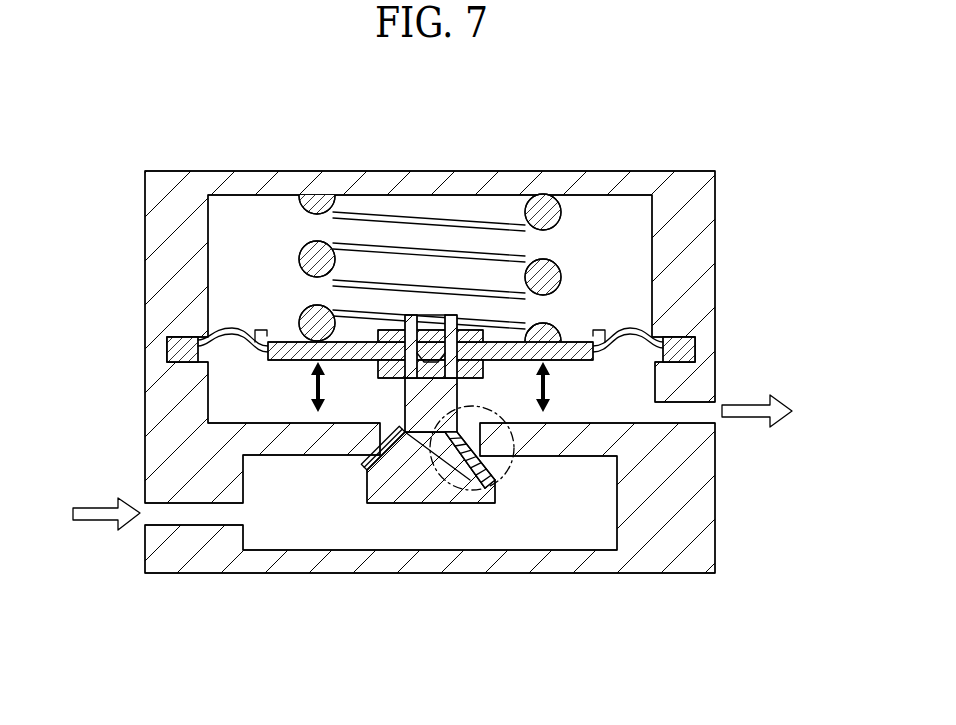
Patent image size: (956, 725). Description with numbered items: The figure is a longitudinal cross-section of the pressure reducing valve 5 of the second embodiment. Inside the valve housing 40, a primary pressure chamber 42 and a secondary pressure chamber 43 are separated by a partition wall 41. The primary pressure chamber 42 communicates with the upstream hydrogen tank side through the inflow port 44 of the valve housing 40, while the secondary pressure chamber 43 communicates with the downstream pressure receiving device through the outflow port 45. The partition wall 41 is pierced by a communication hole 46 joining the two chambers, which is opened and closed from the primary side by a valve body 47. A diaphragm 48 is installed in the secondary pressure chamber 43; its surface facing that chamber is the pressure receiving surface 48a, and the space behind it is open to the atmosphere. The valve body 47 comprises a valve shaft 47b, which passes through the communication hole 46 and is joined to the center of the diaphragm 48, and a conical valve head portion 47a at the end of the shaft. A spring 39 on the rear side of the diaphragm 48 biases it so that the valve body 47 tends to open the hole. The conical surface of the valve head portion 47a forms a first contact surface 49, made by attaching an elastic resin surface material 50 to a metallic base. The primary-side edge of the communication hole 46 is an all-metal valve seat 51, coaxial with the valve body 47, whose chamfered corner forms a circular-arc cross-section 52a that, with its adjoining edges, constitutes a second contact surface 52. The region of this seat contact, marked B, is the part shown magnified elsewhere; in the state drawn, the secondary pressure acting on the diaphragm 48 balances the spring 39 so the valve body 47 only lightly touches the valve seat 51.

The pressure reducing valve 5 is at (445, 384).
The spring 39 is at (543, 210).
The valve housing 40 is at (695, 229).
The partition wall 41 is at (295, 440).
The primary pressure chamber 42 is at (282, 535).
The secondary pressure chamber 43 is at (300, 380).
The inflow port 44 is at (192, 513).
The outflow port 45 is at (695, 400).
The communication hole 46 is at (422, 267).
The valve body 47 is at (431, 560).
The valve head portion 47a is at (430, 485).
The valve shaft 47b is at (462, 355).
The diaphragm 48 is at (375, 265).
The pressure receiving surface 48a is at (270, 366).
The first contact surface 49 is at (490, 440).
The surface material 50 is at (388, 447).
The valve seat 51 is at (372, 457).
The second contact surface 52 is at (497, 550).
The circular-arc cross-section 52a is at (462, 465).
The part B is at (505, 482).